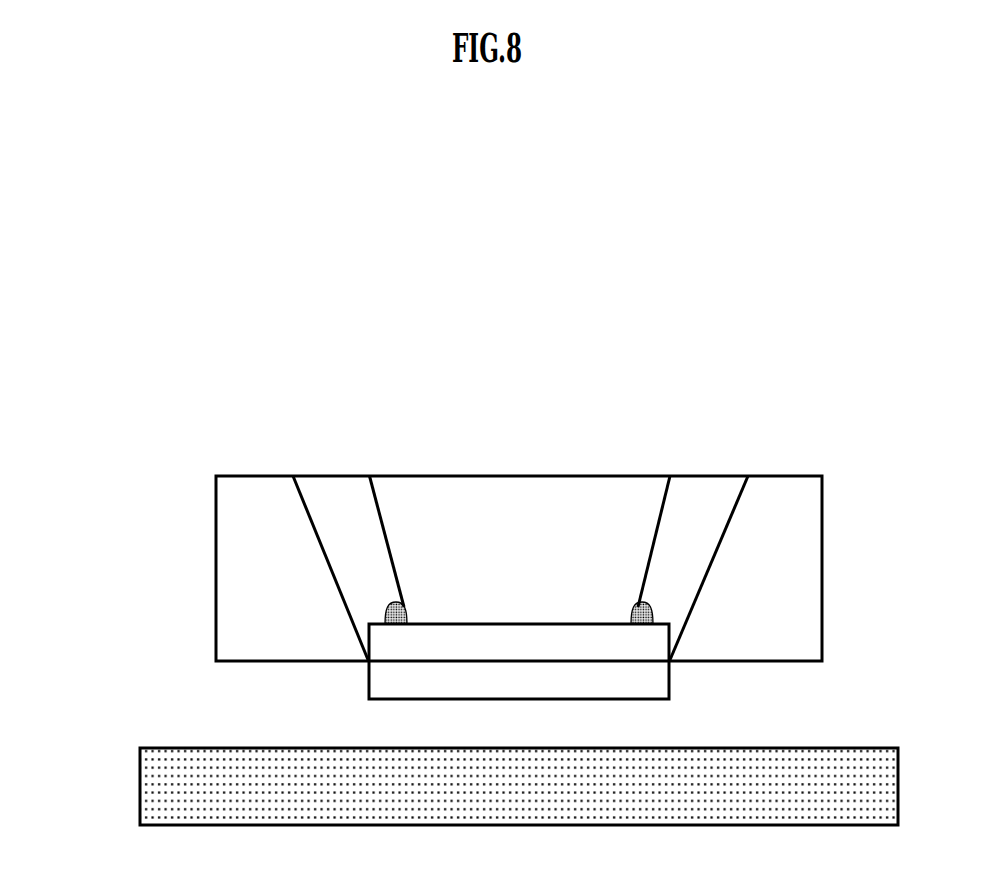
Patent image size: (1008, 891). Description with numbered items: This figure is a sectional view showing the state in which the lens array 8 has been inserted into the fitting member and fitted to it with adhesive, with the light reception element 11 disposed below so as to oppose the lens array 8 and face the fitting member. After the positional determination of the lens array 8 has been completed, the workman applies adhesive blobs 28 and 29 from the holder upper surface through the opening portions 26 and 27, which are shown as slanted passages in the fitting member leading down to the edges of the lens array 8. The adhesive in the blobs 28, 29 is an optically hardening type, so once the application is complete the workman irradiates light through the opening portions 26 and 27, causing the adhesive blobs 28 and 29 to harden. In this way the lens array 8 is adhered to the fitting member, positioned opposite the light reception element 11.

The lens array 8 is at (388, 662).
The light reception element 11 is at (197, 788).
The opening portion 26 is at (330, 503).
The opening portion 27 is at (722, 500).
The adhesive blob 28 is at (407, 607).
The adhesive blob 29 is at (650, 610).